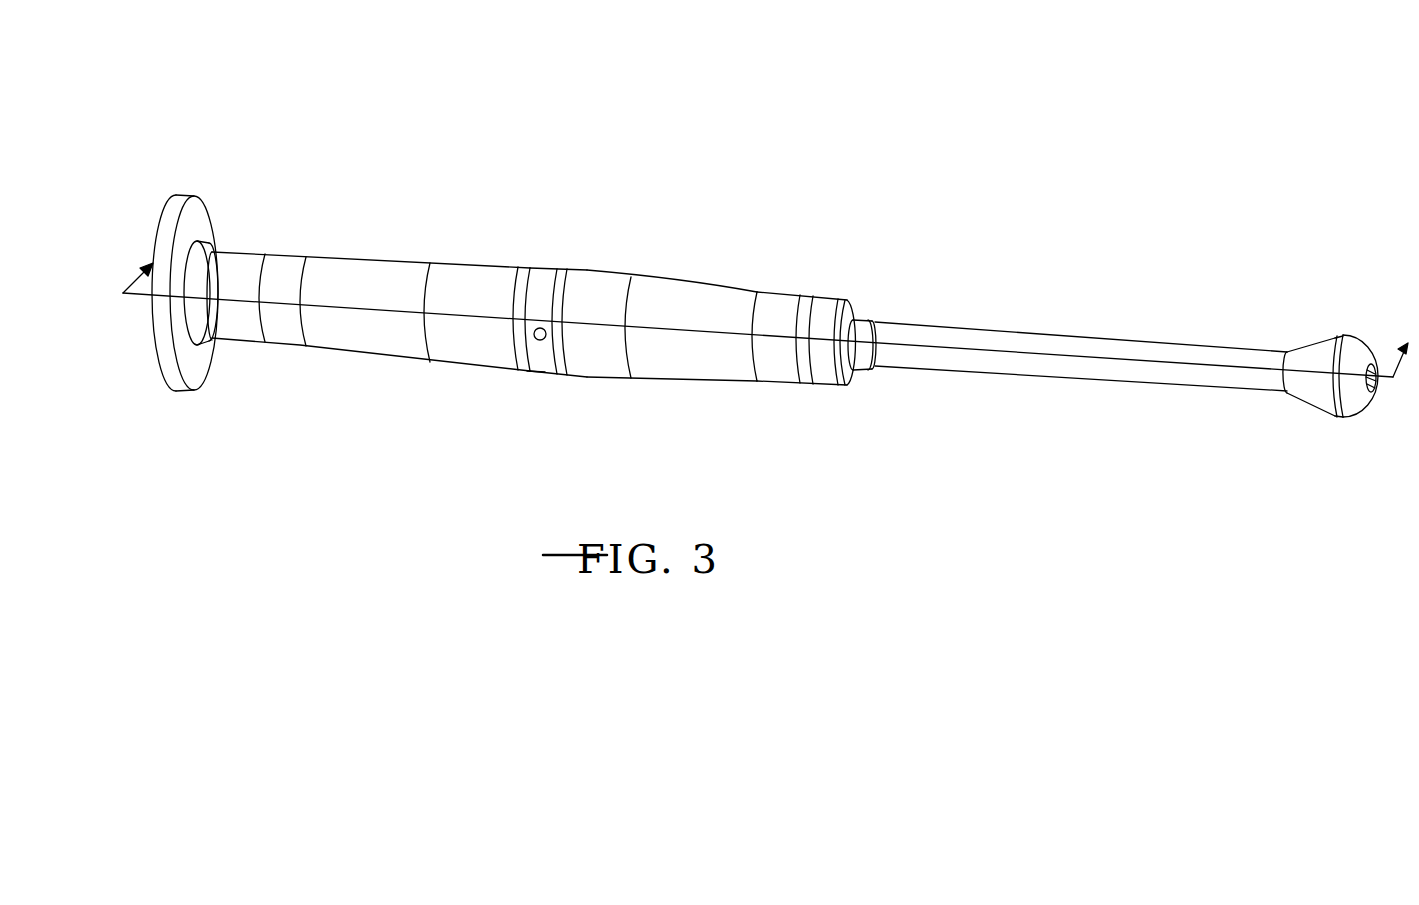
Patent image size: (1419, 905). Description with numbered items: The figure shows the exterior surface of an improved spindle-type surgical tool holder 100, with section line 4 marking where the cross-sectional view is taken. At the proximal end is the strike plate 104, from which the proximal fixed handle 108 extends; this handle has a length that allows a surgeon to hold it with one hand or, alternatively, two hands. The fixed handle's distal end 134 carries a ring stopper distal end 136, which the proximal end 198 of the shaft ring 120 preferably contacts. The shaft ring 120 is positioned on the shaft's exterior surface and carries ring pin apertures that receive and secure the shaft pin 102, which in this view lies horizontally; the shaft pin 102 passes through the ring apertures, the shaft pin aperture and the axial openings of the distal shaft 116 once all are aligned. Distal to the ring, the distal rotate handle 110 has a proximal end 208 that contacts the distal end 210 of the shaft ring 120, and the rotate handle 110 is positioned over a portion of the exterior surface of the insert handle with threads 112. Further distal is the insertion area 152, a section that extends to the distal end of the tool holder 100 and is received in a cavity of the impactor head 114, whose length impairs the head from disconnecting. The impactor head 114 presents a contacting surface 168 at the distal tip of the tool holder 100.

The spindle-type surgical tool holder 100 is at (1060, 132).
The section line 4- 4 is at (768, 315).
The strike plate 104 is at (153, 348).
The proximal fixed handle 108 is at (527, 378).
The distal end of fixed handle 134 is at (529, 266).
The ring stopper distal end 136 is at (477, 289).
The shaft ring 120 is at (553, 267).
The distal end of shaft ring 210 is at (567, 268).
The proximal end of rotate handle 208 is at (573, 268).
The shaft pin 102 is at (546, 347).
The proximal end of shaft ring 198 is at (533, 373).
The distal rotate handle 110 is at (582, 258).
The insert handle with threads 112 is at (830, 297).
The insertion area 152 is at (1282, 335).
The impactor head 114 is at (1333, 413).
The contacting surface 168 is at (1367, 412).
The distal shaft 116 is at (1378, 364).